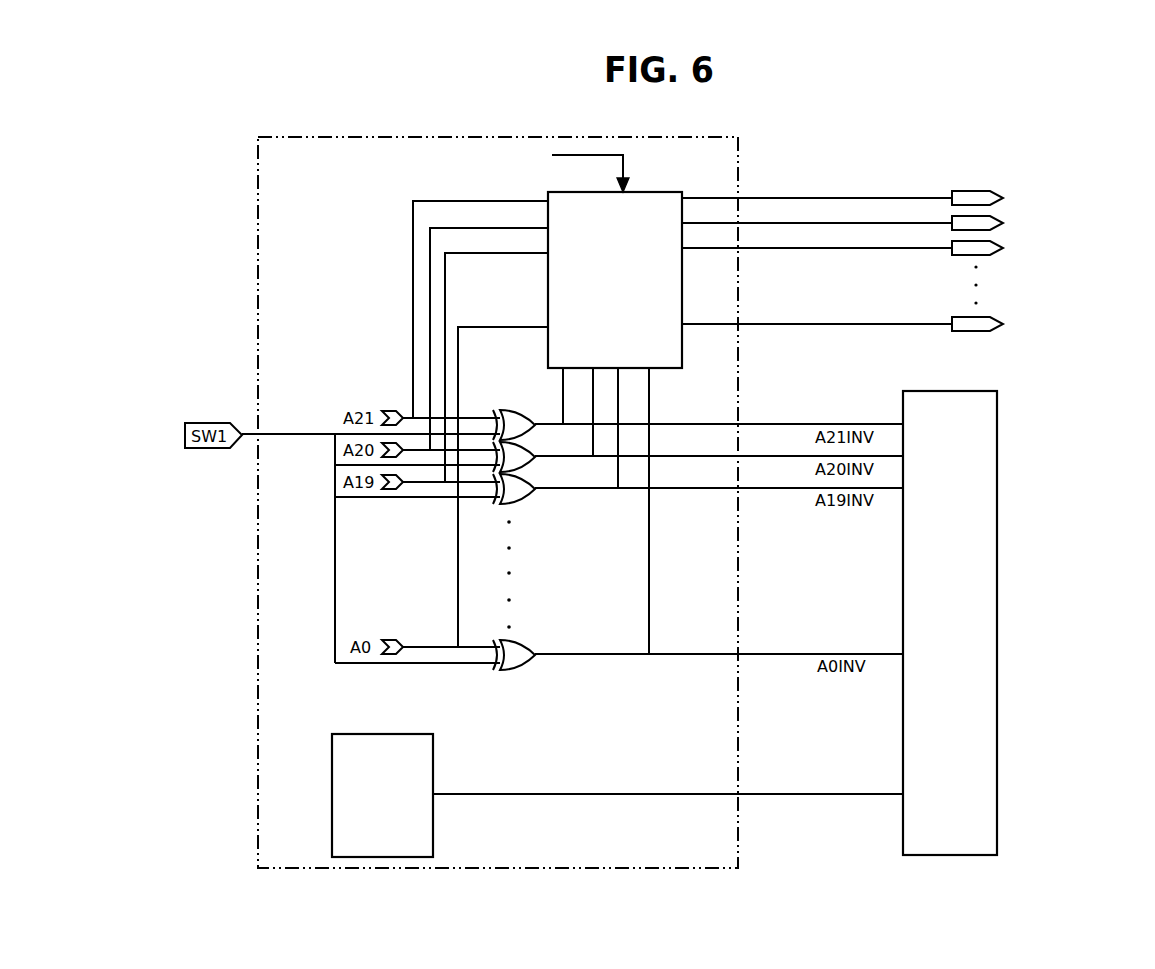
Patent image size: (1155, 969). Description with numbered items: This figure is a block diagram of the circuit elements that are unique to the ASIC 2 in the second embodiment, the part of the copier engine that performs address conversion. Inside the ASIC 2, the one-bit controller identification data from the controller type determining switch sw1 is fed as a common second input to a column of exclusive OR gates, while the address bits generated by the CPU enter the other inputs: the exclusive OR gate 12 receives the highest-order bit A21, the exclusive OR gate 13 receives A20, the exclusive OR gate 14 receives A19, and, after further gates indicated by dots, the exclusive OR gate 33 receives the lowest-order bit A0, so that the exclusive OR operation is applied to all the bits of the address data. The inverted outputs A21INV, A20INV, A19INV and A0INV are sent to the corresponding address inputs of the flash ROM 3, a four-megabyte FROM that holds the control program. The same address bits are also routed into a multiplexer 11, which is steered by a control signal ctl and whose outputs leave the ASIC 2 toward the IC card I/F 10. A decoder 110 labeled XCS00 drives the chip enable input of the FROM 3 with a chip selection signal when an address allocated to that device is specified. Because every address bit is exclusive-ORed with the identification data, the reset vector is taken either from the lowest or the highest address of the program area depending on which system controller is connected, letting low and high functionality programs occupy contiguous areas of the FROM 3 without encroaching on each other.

The ASIC 2 is at (553, 135).
The multiplexer 11 is at (655, 191).
The exclusive OR gate 12 is at (515, 410).
The exclusive OR gate 13 is at (528, 447).
The exclusive OR gate 14 is at (528, 479).
The exclusive OR gate 33 is at (530, 643).
The decoder 110 is at (433, 748).
The flash ROM (FROM) 3 is at (997, 585).
The IC card I/F 10 is at (1026, 191).